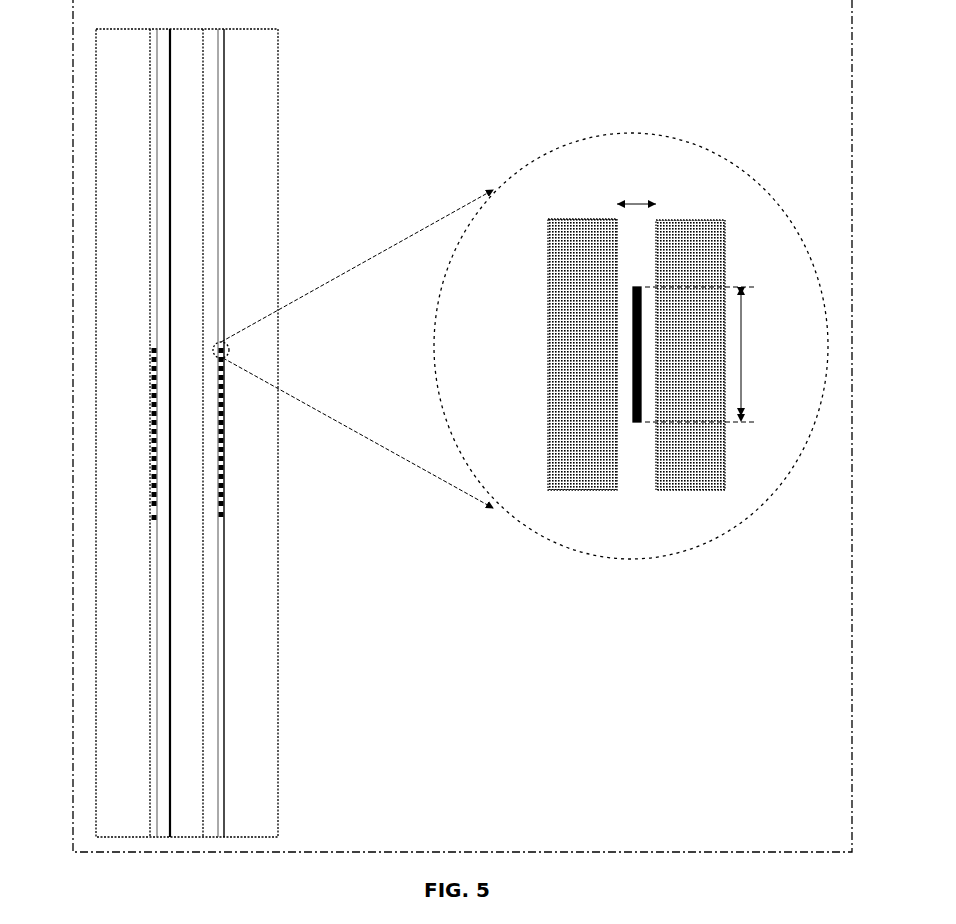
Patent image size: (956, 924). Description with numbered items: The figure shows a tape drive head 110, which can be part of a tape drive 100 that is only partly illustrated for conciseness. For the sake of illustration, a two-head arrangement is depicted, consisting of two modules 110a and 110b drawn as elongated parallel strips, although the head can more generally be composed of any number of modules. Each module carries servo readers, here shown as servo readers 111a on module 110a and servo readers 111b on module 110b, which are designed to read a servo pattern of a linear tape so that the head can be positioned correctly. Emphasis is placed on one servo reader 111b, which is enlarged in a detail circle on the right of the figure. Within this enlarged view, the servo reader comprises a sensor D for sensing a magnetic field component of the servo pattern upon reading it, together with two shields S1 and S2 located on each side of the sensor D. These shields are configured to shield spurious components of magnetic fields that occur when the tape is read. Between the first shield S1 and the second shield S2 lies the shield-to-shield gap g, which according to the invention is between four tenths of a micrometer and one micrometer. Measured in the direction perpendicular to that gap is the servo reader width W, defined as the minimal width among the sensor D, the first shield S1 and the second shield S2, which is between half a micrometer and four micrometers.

The tape drive 100 is at (605, 850).
The tape drive head 110 is at (243, 433).
The module 110a is at (131, 750).
The module 110b is at (253, 712).
The servo reader 111a is at (155, 344).
The servo reader 111b is at (218, 340).
The first shield S1 is at (573, 478).
The second shield S2 is at (697, 478).
The sensor D is at (638, 422).
The servo reader width W is at (707, 354).
The shield-to-shield gap g is at (636, 195).